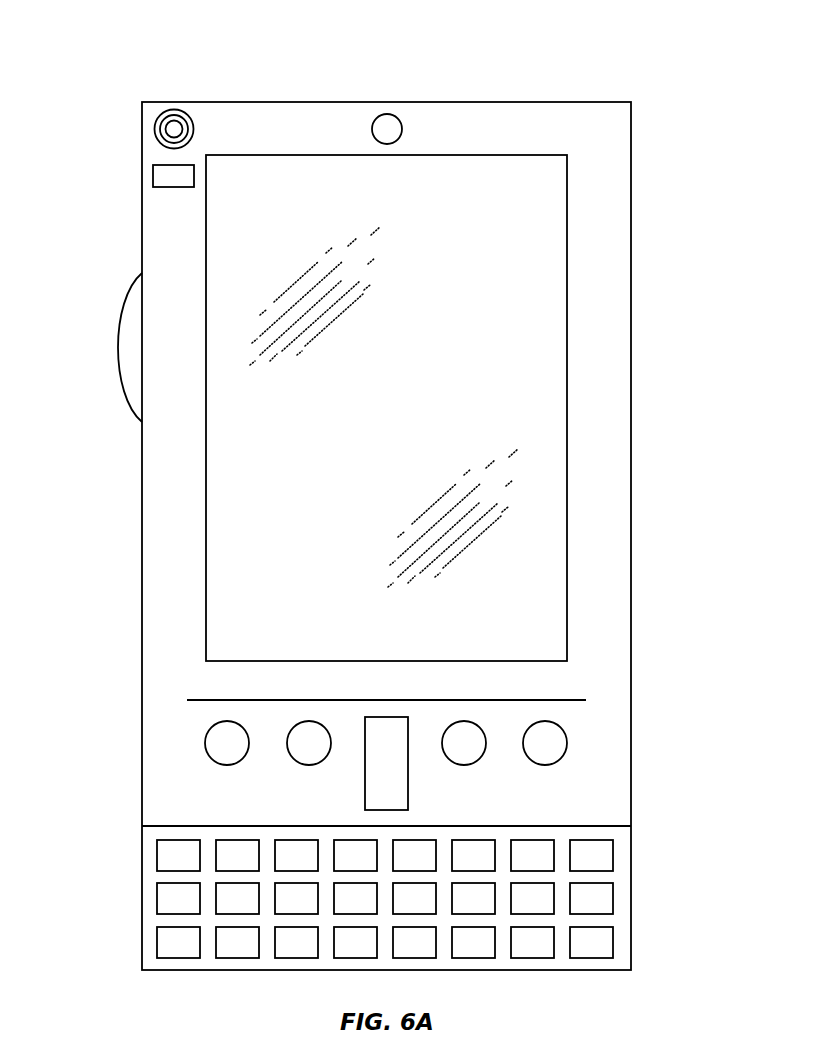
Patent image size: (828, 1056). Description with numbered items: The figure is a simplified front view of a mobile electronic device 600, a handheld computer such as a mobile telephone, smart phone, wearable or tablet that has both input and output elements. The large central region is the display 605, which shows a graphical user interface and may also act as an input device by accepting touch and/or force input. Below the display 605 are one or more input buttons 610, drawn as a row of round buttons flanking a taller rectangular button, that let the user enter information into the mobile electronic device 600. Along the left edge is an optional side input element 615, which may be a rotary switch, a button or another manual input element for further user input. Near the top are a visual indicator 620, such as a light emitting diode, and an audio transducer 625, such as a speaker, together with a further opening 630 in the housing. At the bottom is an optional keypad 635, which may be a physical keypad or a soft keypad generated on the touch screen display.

The mobile electronic device 600 is at (631, 194).
The display 605 is at (239, 535).
The input buttons 610 is at (365, 788).
The side input element 615 is at (118, 347).
The visual indicator 620 is at (153, 178).
The audio transducer 625 is at (154, 130).
The speaker 630 is at (387, 114).
The keypad 635 is at (150, 907).